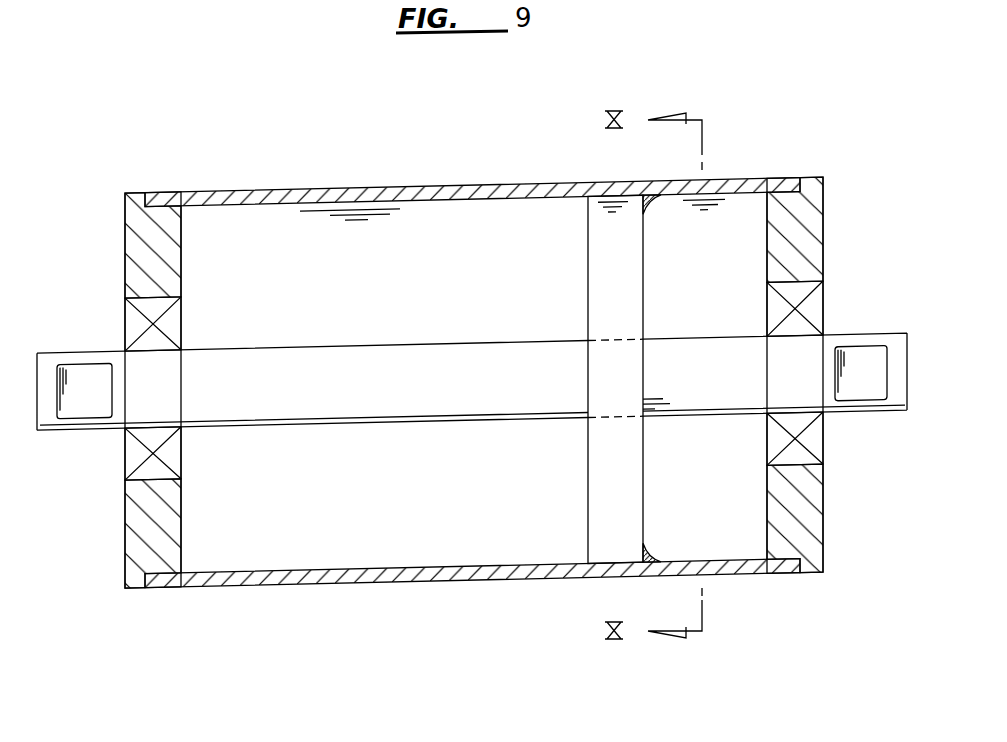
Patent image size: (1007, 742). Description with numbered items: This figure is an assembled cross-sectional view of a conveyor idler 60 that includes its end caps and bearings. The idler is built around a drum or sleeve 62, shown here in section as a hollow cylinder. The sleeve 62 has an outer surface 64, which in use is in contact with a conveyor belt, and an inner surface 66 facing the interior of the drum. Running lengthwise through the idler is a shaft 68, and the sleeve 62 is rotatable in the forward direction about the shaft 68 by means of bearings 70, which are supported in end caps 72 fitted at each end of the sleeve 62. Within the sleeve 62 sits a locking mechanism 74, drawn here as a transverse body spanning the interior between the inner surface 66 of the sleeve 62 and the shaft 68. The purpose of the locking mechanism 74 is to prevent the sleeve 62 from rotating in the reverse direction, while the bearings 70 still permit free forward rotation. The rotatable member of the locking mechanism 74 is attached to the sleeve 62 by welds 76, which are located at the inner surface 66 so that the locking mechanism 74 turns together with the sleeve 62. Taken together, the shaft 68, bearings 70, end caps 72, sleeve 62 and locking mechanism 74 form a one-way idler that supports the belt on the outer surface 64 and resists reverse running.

The conveyor idler 60 is at (341, 139).
The sleeve 62 is at (272, 190).
The outer surface 64 is at (456, 185).
The inner surface 66 is at (461, 203).
The shaft 68 is at (348, 349).
The bearings 70 is at (126, 323).
The end caps 72 is at (126, 258).
The locking mechanism 74 is at (592, 314).
The welds 76 is at (652, 213).